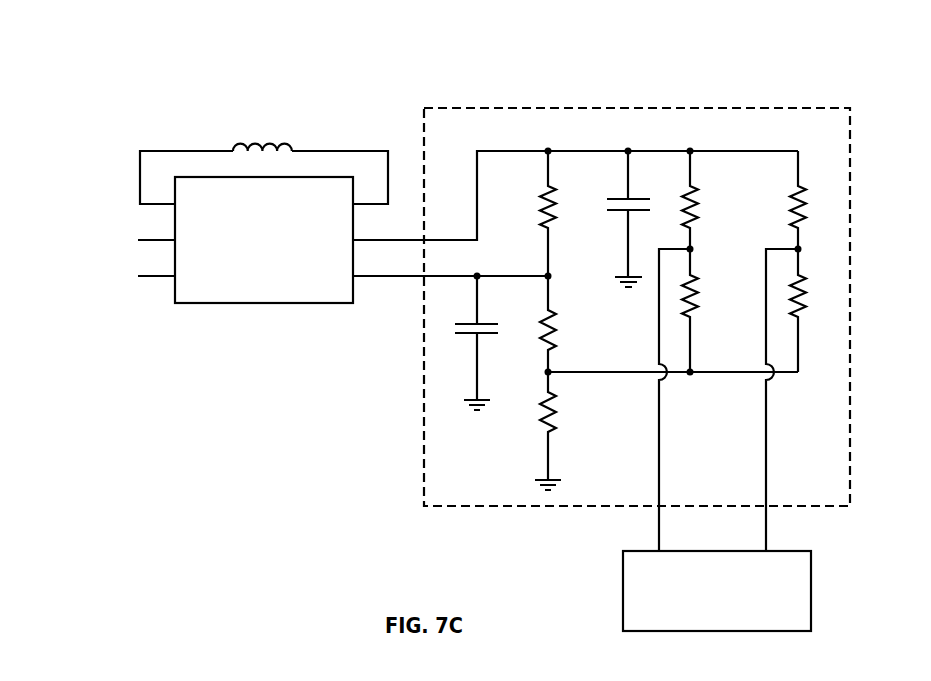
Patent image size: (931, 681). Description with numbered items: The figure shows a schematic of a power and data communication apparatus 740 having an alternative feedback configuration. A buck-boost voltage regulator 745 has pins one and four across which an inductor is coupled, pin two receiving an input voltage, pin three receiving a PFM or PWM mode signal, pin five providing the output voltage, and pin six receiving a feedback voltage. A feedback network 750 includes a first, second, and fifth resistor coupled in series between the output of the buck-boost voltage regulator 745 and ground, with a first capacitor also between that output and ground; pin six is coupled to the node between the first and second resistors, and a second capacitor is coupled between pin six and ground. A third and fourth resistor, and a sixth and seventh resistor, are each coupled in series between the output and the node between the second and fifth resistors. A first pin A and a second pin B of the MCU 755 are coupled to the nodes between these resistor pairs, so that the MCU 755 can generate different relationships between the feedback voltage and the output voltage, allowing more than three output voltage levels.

The power and data communication apparatus 740 is at (597, 47).
The buck-boost voltage regulator 745 is at (282, 295).
The feedback network 750 is at (838, 141).
The MCU 755 is at (735, 616).